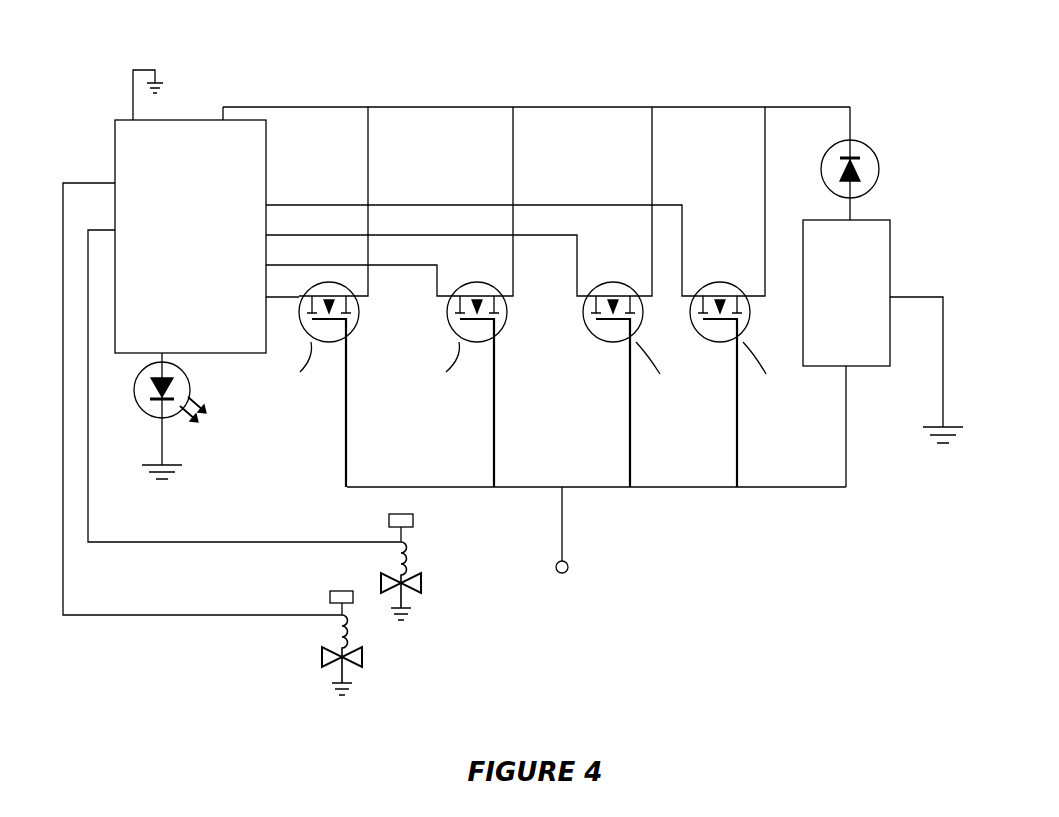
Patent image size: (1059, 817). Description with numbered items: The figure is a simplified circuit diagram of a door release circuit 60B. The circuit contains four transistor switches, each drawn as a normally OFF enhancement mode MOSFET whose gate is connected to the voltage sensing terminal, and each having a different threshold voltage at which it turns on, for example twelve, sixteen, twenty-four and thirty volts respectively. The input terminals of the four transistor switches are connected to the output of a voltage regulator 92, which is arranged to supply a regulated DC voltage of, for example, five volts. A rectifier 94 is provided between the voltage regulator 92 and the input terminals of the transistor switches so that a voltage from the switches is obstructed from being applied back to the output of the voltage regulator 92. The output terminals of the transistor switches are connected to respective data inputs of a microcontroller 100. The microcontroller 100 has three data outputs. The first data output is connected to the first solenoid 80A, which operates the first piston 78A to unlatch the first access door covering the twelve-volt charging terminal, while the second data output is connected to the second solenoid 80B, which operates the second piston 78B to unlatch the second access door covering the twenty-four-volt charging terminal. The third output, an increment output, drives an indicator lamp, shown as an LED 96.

The door release circuit 60B is at (241, 86).
The microcontroller 100 is at (266, 133).
The rectifier 94 is at (880, 171).
The voltage regulator 92 is at (890, 262).
The LED 96 is at (191, 393).
The first piston 78A is at (330, 602).
The first solenoid 80A is at (341, 627).
The second piston 78B is at (388, 531).
The second solenoid 80B is at (399, 556).